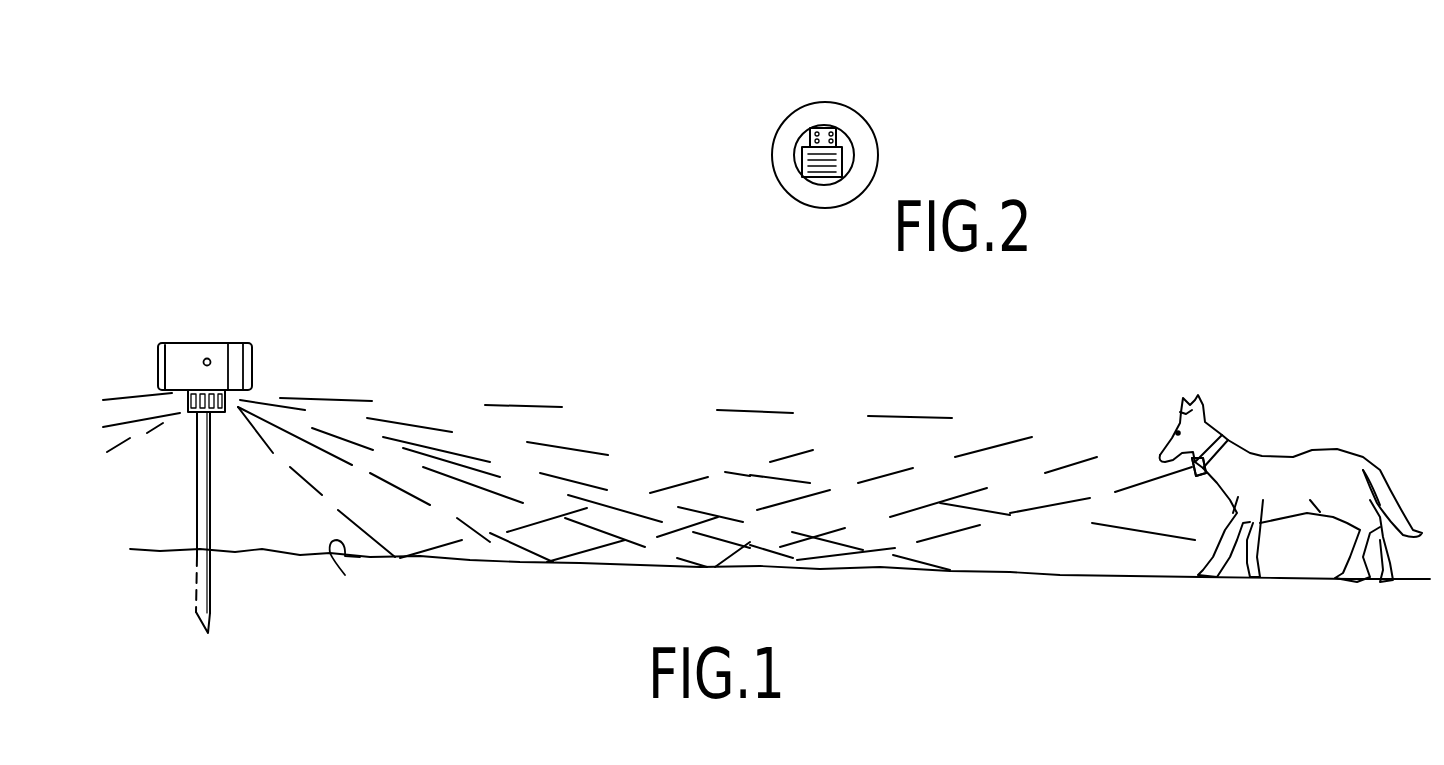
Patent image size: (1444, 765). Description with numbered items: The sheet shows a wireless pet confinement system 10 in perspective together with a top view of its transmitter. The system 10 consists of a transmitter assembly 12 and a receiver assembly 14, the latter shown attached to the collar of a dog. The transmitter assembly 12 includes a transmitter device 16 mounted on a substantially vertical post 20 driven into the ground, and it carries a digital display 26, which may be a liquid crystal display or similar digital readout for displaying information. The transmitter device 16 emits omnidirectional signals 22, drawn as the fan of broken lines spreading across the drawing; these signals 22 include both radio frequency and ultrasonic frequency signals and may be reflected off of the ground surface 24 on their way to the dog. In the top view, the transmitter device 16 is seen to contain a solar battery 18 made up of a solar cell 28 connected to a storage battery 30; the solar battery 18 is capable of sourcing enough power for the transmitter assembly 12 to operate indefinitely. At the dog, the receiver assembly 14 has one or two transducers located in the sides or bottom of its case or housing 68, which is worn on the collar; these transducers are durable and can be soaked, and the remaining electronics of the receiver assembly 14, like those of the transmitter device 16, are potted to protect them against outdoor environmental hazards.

In FIG. 1, the wireless pet confinement system 10 is at (327, 643).
In FIG. 1, the transmitter assembly 12 is at (263, 295).
In FIG. 1, the receiver assembly 14 is at (1240, 392).
In FIG. 1, the transmitter device 16 is at (180, 358).
In FIG. 2, the transmitter device 16 is at (778, 155).
In FIG. 2, the solar battery 18 is at (902, 118).
In FIG. 1, the vertical post 20 is at (200, 480).
In FIG. 1, the omnidirectional signals 22 is at (580, 450).
In FIG. 1, the ground surface 24 is at (345, 575).
In FIG. 1, the digital display 26 is at (228, 413).
In FIG. 2, the solar cell 28 is at (823, 170).
In FIG. 2, the storage battery 30 is at (822, 128).
In FIG. 1, the housing 68 is at (1195, 476).